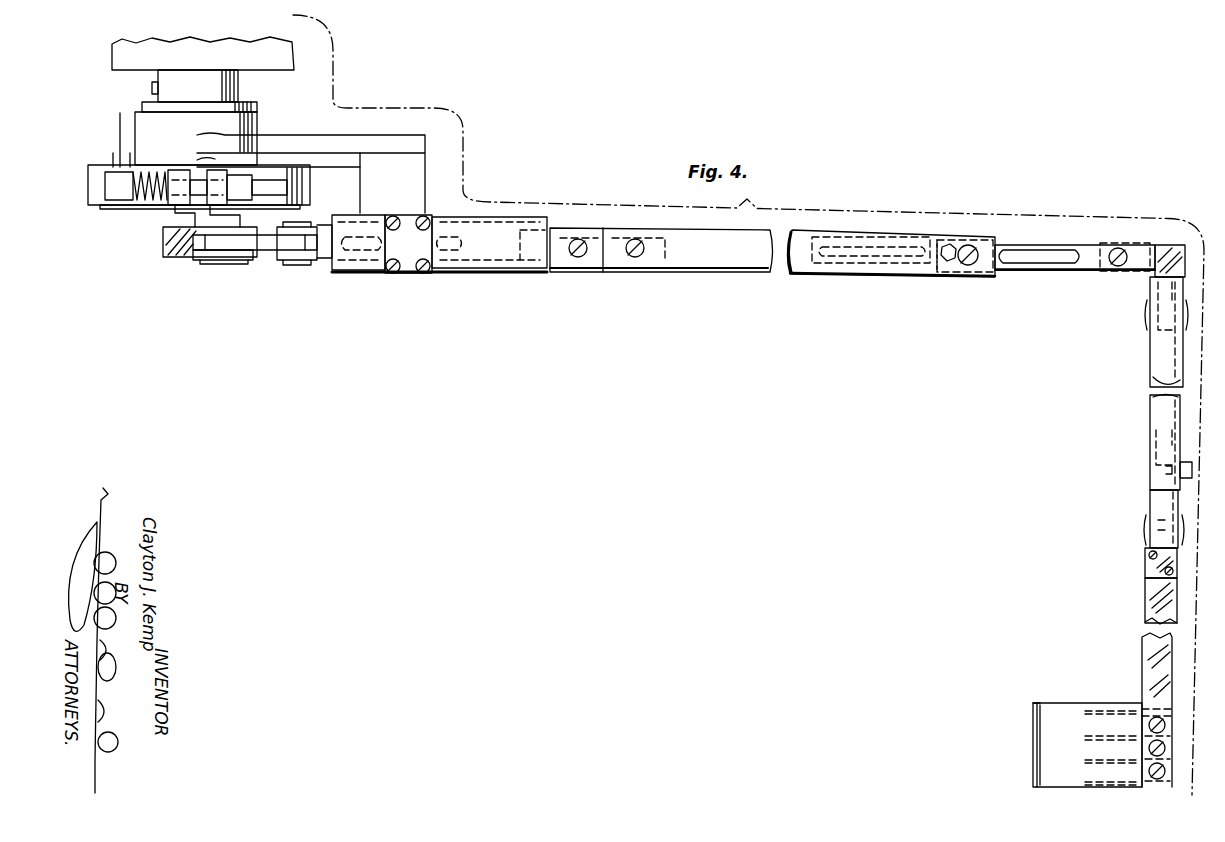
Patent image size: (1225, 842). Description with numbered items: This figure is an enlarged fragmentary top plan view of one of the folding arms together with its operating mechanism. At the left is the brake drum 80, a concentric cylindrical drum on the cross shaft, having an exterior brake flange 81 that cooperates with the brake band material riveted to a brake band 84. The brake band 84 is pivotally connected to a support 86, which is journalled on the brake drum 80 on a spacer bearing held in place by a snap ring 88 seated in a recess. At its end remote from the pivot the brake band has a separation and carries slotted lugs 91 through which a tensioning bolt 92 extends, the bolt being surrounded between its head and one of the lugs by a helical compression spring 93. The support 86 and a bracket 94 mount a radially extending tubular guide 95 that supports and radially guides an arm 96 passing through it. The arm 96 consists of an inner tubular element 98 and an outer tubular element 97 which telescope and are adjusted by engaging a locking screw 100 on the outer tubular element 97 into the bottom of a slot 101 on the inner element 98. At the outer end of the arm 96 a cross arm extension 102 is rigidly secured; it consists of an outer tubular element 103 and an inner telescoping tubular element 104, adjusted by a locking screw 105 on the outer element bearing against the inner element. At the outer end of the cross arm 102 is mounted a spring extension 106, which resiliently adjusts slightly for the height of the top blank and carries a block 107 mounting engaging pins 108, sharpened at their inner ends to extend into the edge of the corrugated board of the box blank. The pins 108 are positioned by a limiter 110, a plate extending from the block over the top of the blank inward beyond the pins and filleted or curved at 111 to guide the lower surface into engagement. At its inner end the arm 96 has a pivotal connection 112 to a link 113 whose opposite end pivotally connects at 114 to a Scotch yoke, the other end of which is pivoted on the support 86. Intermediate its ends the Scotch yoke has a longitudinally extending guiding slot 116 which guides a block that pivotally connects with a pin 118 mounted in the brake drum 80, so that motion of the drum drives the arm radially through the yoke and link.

The brake drum 80 is at (110, 131).
The exterior brake flange 81 is at (300, 167).
The brake band 84 is at (305, 190).
The support 86 is at (323, 130).
The snap ring 88 is at (246, 108).
The slotted lugs 91 is at (180, 172).
The tensioning bolt 92 is at (128, 178).
The helical compression spring 93 is at (145, 205).
The bracket 94 is at (394, 158).
The tubular guide 95 is at (472, 272).
The arm 96 is at (605, 273).
The outer tubular element 97 is at (798, 276).
The inner tubular element 98 is at (1111, 266).
The locking screw 100 is at (966, 265).
The slot 101 is at (1075, 278).
The cross arm extension 102 is at (1154, 362).
The outer tubular element 103 is at (1155, 420).
The inner telescoping tubular element 104 is at (1158, 508).
The locking screw 105 is at (1180, 472).
The spring extension 106 is at (1157, 646).
The block 107 is at (1158, 785).
The engaging pins 108 is at (1128, 710).
The limiter 110 is at (1056, 739).
The fillet 111 is at (1036, 722).
The pivotal connection 112 is at (293, 265).
The link 113 is at (268, 252).
The pivotal connection 114 is at (230, 262).
The guiding slot 116 is at (182, 255).
The pin 118 is at (190, 215).